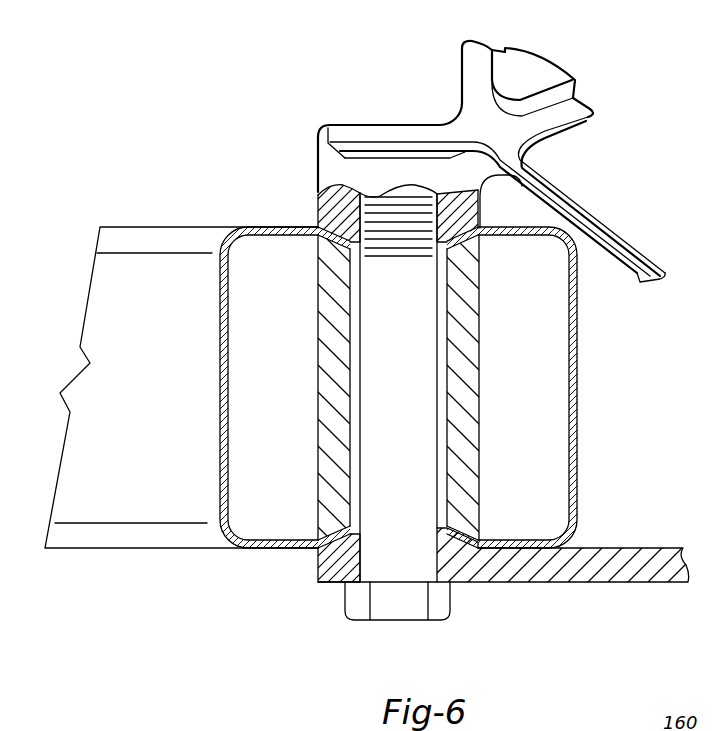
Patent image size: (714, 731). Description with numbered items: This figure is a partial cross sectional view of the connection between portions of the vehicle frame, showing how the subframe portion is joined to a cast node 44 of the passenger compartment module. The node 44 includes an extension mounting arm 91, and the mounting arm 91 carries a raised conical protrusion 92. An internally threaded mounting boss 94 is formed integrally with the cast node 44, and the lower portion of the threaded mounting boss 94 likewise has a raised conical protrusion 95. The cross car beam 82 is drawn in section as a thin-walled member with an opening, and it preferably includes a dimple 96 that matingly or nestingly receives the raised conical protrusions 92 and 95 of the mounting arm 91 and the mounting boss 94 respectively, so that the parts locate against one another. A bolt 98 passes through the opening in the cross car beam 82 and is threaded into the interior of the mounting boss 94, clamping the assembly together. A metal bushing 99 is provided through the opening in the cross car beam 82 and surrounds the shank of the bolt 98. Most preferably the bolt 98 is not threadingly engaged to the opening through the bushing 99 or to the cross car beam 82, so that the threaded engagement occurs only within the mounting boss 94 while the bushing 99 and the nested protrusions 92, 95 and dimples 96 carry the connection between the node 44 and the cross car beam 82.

The node 44 is at (533, 72).
The cross car beam 82 is at (142, 409).
The extension mounting arm 91 is at (582, 572).
The raised conical protrusion 92 is at (450, 552).
The internally threaded mounting boss 94 is at (318, 155).
The raised conical protrusion 95 is at (333, 210).
The dimple 96 is at (458, 218).
The bolt 98 is at (402, 590).
The metal bushing 99 is at (320, 403).